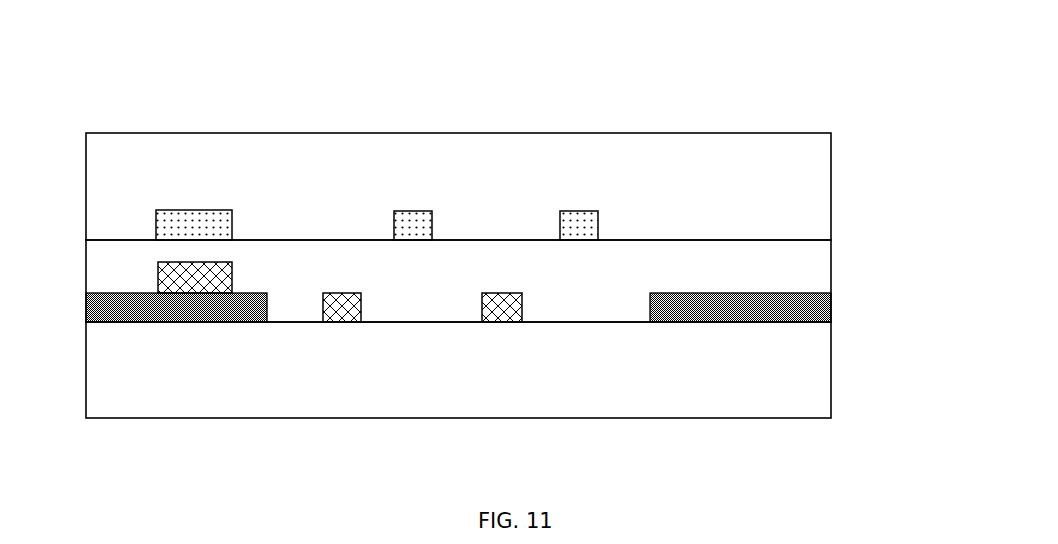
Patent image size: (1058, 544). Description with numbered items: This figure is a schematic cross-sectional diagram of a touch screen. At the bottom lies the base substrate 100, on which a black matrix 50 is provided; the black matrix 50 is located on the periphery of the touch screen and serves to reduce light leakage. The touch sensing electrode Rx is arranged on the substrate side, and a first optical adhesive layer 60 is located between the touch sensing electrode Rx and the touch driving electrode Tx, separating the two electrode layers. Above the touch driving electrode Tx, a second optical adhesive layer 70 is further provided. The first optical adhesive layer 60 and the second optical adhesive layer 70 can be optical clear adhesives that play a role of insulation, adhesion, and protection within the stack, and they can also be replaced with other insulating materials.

The second optical adhesive layer 70 is at (775, 167).
The first optical adhesive layer 60 is at (809, 269).
The black matrix 50 is at (831, 300).
The base substrate 100 is at (382, 392).
The touch driving electrode Tx is at (203, 223).
The touch sensing electrode Rx is at (345, 295).